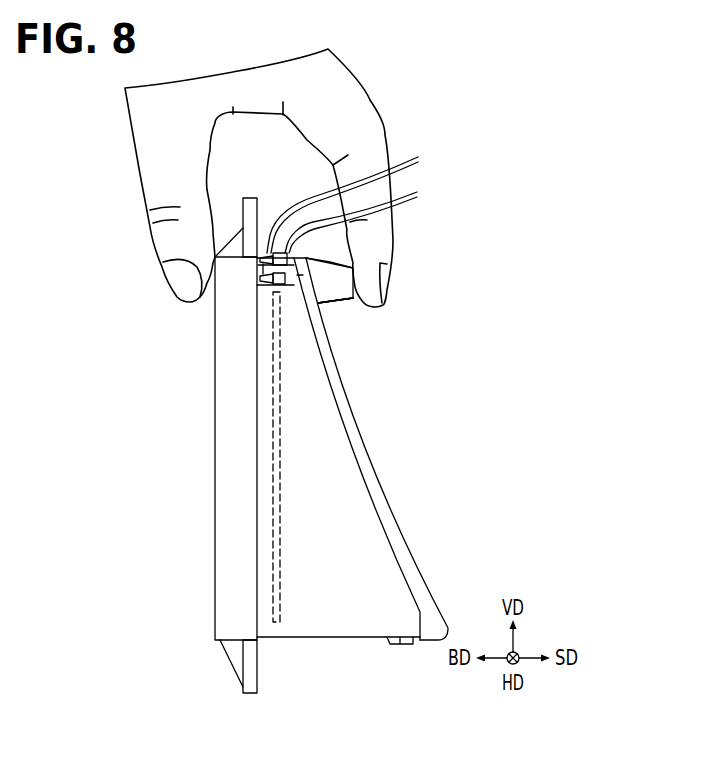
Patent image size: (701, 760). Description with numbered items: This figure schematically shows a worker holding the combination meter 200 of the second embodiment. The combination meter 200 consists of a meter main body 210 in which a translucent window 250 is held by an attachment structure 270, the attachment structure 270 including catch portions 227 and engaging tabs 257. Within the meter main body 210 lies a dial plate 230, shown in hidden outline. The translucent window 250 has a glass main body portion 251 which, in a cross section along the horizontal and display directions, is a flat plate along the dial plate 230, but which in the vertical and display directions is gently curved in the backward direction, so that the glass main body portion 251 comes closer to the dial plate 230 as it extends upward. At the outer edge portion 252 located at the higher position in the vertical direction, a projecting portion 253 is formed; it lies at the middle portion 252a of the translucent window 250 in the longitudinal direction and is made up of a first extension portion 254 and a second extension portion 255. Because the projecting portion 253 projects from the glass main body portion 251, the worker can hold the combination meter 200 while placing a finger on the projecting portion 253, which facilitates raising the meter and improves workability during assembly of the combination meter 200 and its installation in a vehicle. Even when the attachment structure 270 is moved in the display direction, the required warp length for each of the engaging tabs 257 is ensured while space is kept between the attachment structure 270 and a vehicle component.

The combination meter 200 is at (316, 445).
The meter main body 210 is at (207, 618).
The catch portions 227 is at (371, 216).
The dial plate 230 is at (273, 500).
The translucent window 250 is at (388, 449).
The glass main body portion 251 is at (408, 550).
The outer edge portion 252 is at (318, 305).
The middle portion 252a is at (335, 300).
The projecting portion 253 is at (353, 278).
The first extension portion 254 is at (353, 298).
The second extension portion 255 is at (335, 260).
The engaging tabs 257 is at (362, 196).
The attachment structure 270 is at (392, 195).